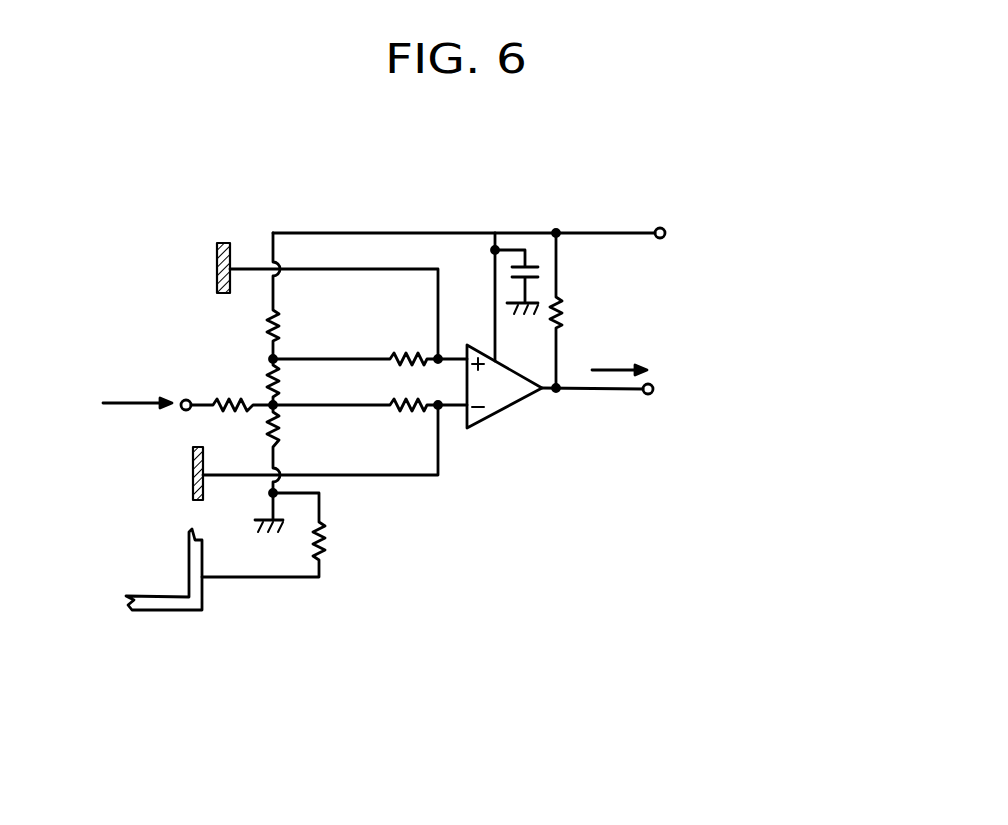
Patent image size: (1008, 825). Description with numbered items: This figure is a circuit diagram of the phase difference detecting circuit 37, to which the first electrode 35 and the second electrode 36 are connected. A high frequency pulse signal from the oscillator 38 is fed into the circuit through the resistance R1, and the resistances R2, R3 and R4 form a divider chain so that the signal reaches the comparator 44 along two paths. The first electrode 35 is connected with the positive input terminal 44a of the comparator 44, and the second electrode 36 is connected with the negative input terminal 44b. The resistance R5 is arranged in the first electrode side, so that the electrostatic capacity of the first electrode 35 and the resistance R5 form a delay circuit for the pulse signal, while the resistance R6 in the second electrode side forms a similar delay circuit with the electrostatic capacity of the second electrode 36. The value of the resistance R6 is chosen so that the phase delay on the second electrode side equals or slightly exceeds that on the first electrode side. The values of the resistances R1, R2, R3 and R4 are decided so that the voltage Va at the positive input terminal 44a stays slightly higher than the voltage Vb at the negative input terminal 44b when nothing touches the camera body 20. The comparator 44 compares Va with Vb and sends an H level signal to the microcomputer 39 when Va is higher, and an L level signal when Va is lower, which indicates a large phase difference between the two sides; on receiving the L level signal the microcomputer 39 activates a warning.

The camera body 20 is at (160, 612).
The first electrode 35 is at (217, 270).
The second electrode 36 is at (193, 475).
The phase difference detecting circuit 37 is at (495, 577).
The oscillator 38 is at (116, 376).
The microcomputer 39 is at (750, 388).
The comparator 44 is at (510, 418).
The positive input terminal 44a is at (464, 343).
The negative input terminal 44b is at (463, 417).
The resistance R1 is at (232, 390).
The resistance R2 is at (296, 324).
The resistance R3 is at (296, 383).
The resistance R4 is at (297, 431).
The resistance R5 is at (370, 344).
The resistance R6 is at (370, 391).